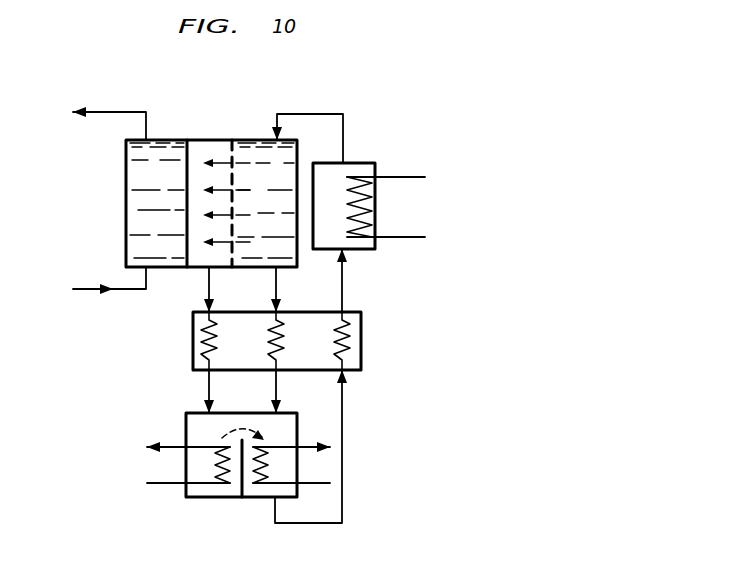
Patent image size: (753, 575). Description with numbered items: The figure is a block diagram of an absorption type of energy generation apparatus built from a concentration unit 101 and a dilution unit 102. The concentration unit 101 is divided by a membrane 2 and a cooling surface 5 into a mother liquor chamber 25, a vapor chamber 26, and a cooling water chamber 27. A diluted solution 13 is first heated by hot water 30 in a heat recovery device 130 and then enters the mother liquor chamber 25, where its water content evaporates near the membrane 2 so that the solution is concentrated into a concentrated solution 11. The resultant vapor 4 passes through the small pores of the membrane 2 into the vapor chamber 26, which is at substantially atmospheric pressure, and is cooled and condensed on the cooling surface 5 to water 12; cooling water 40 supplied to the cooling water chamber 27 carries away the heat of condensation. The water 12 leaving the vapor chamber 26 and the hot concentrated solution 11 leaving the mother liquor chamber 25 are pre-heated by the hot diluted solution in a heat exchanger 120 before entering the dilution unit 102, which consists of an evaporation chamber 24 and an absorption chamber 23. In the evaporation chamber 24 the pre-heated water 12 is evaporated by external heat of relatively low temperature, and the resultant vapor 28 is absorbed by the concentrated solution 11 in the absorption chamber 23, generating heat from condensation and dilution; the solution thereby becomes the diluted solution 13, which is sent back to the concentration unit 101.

The concentration unit 101 is at (126, 152).
The cooling water chamber 27 is at (166, 138).
The vapor chamber 26 is at (203, 150).
The mother liquor chamber 25 is at (258, 150).
The vapor 4 is at (216, 160).
The cooling surface 5 is at (185, 170).
The membrane 2 is at (235, 175).
The cooling water 40 is at (88, 283).
The water 12 is at (209, 290).
The concentrated solution 11 is at (276, 290).
The heat exchanger 120 is at (193, 325).
The diluted solution 13 is at (342, 404).
The heat recovery device 130 is at (365, 252).
The hot water 30 is at (398, 176).
The dilution unit 102 is at (212, 498).
The evaporation chamber 24 is at (202, 440).
The absorption chamber 23 is at (282, 439).
The vapor 28 is at (236, 426).